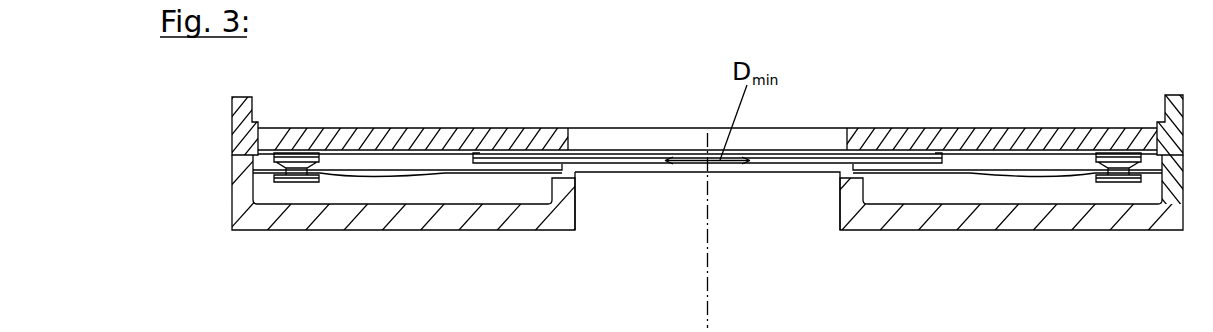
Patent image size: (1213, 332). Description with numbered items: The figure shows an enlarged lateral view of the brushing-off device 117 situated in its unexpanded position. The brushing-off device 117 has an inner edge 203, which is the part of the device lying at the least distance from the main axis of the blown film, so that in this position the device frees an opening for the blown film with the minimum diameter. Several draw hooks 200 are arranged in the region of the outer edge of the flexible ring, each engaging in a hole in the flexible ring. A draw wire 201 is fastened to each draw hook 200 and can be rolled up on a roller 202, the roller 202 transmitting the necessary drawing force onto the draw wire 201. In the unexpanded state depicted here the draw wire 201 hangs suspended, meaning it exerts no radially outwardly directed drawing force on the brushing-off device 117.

The brushing-off device 117 is at (640, 137).
The draw hook 200 is at (463, 172).
The draw wire 201 is at (363, 177).
The roller 202 is at (307, 182).
The inner edge 203 is at (665, 164).